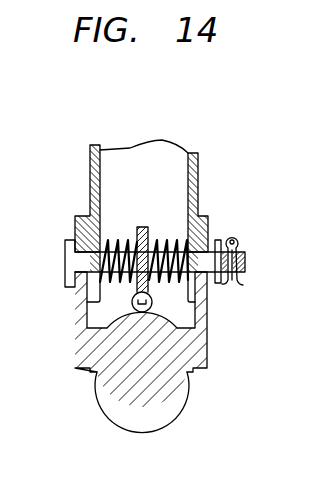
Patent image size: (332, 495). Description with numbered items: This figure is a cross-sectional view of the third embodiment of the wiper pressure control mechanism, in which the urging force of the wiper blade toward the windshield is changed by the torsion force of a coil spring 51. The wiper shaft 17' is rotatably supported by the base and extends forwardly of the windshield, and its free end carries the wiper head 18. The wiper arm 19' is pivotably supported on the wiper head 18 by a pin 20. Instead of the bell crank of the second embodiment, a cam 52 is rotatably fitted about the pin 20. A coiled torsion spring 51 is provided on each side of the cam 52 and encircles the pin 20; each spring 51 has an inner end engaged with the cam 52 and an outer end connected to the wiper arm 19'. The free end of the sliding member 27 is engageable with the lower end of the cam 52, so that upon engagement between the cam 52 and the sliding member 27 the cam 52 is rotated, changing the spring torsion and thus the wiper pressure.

The wiper shaft 17' is at (142, 413).
The wiper head 18 is at (82, 317).
The wiper arm 19' is at (171, 221).
The pin 20 is at (70, 252).
The sliding member 27 is at (152, 306).
The coil spring 51 is at (170, 242).
The cam 52 is at (144, 226).